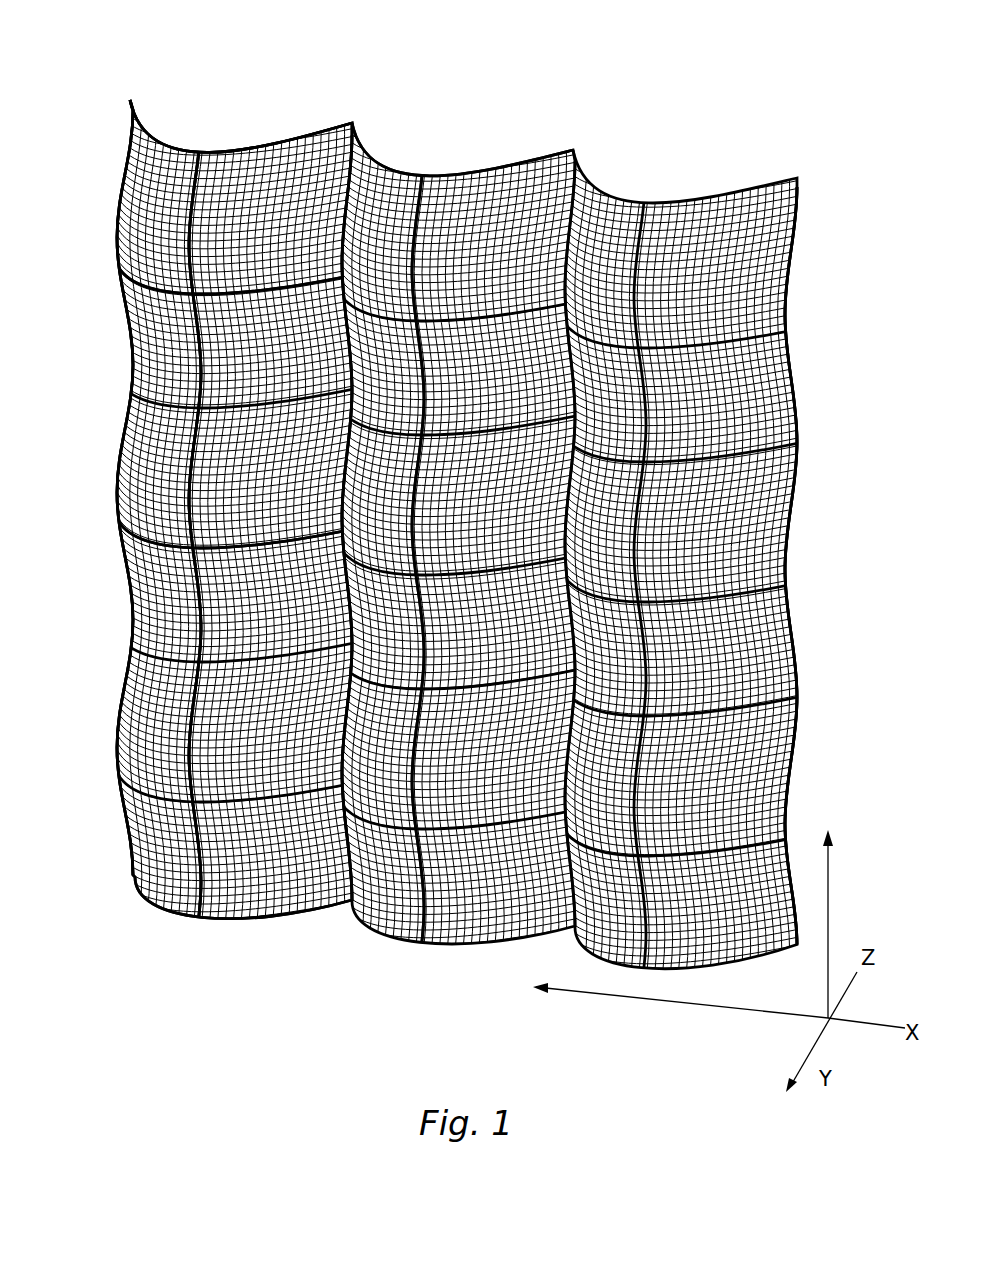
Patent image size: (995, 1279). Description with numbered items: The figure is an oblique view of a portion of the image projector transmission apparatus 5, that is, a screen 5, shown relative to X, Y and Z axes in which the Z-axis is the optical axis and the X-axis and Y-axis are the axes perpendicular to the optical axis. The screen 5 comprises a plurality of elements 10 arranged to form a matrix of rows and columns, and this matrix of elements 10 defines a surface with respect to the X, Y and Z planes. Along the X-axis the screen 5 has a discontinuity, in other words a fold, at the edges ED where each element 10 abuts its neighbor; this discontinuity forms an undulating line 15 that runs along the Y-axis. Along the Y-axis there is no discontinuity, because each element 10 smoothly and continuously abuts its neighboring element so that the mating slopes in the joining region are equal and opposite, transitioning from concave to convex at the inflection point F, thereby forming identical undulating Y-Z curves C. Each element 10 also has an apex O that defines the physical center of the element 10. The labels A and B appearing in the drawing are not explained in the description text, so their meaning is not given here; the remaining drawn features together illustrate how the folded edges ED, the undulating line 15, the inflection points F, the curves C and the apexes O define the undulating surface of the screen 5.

The image projector transmission apparatus 5 is at (787, 186).
The element 10 is at (160, 444).
The undulating line 15 is at (792, 263).
The top edge A is at (130, 100).
The fold line B is at (180, 147).
The undulating Y-Z curves C is at (206, 888).
The edges ED is at (368, 156).
The inflection point F is at (788, 346).
The apex O is at (182, 294).